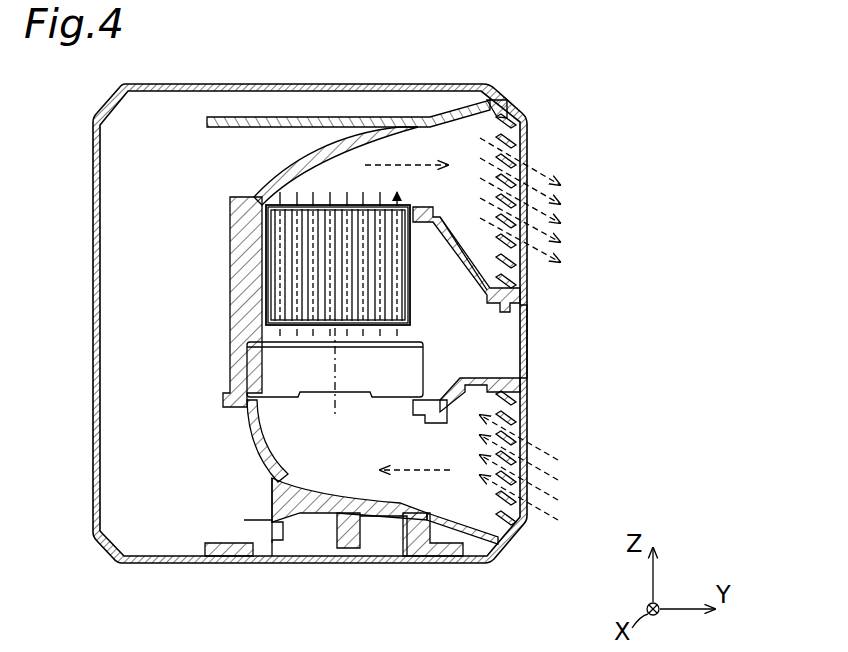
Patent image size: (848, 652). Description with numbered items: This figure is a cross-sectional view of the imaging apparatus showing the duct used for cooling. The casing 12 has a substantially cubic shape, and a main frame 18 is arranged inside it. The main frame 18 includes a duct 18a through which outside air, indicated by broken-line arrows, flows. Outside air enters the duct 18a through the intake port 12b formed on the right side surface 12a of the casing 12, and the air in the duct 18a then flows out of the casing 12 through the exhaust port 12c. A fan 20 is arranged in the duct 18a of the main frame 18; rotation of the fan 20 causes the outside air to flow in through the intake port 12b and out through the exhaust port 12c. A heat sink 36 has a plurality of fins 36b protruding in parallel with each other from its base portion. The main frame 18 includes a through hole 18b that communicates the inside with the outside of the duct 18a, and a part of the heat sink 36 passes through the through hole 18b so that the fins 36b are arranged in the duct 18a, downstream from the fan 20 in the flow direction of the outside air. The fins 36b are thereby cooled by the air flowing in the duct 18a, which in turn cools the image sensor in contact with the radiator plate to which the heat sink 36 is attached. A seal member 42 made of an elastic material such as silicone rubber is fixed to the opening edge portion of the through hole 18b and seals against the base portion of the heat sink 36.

The casing 12 is at (322, 84).
The right side surface 12a is at (522, 336).
The intake port 12b is at (520, 424).
The exhaust port 12c is at (520, 142).
The main frame 18 is at (252, 432).
The duct 18a is at (358, 464).
The through hole 18b is at (262, 262).
The fan 20 is at (260, 367).
The heat sink 36 is at (396, 268).
The fins 36b is at (350, 207).
The seal member 42 is at (268, 222).